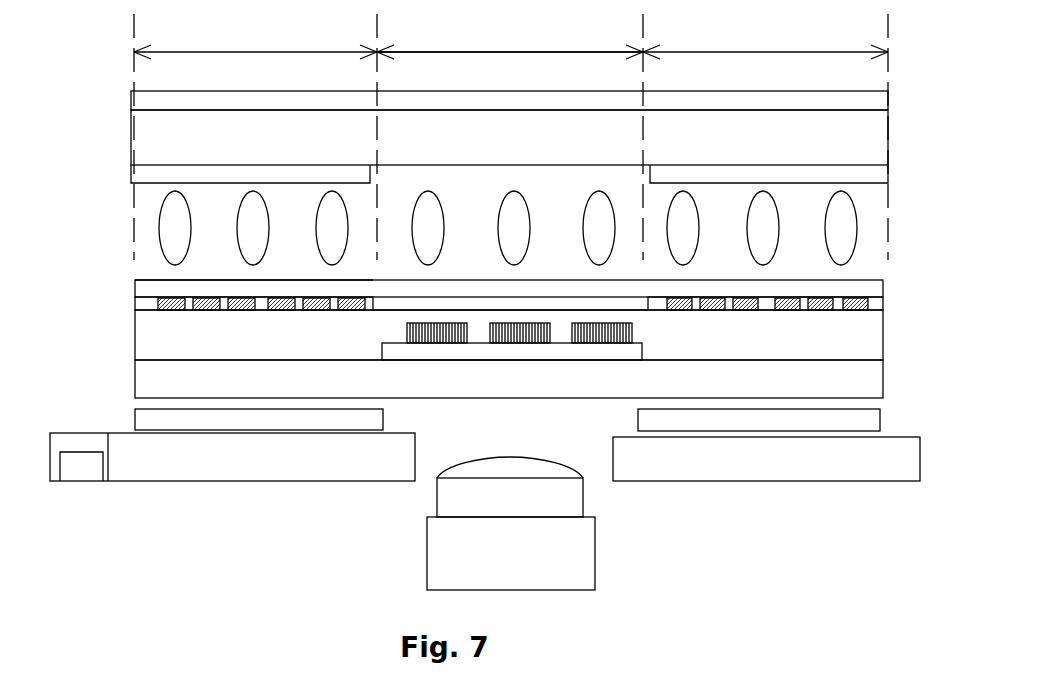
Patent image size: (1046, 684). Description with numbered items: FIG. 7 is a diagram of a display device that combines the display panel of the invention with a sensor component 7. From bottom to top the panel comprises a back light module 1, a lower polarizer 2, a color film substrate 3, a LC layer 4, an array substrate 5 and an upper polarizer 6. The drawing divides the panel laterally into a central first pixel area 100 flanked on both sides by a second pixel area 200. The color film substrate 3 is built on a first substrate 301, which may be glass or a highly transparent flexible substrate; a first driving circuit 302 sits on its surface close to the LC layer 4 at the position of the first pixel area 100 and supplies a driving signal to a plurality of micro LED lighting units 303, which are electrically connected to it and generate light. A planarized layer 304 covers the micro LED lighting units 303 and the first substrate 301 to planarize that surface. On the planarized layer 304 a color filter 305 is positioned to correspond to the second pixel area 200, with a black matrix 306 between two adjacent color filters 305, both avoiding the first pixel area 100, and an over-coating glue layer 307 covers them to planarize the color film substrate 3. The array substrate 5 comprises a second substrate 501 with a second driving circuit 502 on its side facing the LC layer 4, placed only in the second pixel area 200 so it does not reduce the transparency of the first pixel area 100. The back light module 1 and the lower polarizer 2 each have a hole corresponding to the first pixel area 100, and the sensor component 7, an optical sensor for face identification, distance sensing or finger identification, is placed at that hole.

The back light module 1 is at (903, 468).
The lower polarizer 2 is at (877, 425).
The color film substrate 3 is at (503, 365).
The LC layer 4 is at (109, 235).
The array substrate 5 is at (502, 133).
The upper polarizer 6 is at (883, 100).
The sensor component 7 is at (582, 568).
The first pixel area 100 is at (510, 41).
The second pixel area 200 is at (511, 44).
The first substrate 301 is at (875, 383).
The first driving circuit 302 is at (482, 352).
The micro LED lighting units 303 is at (536, 343).
The planarized layer 304 is at (875, 342).
The color filter 305 is at (838, 300).
The black matrix 306 is at (846, 312).
The over-coating glue layer 307 is at (136, 288).
The second substrate 501 is at (877, 137).
The second driving circuit 502 is at (877, 175).